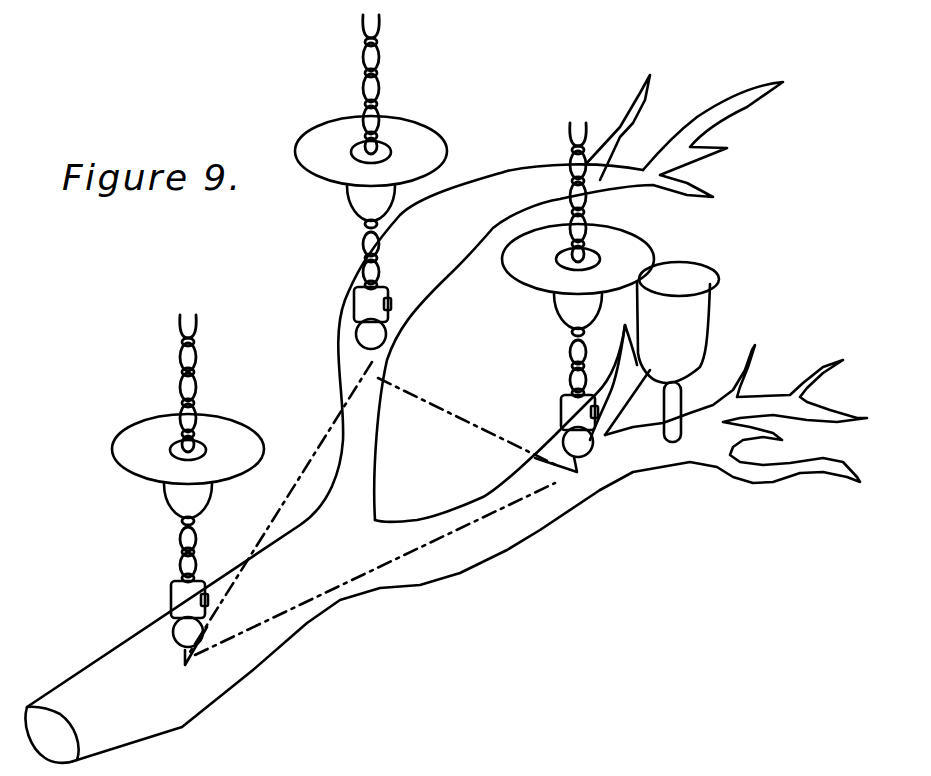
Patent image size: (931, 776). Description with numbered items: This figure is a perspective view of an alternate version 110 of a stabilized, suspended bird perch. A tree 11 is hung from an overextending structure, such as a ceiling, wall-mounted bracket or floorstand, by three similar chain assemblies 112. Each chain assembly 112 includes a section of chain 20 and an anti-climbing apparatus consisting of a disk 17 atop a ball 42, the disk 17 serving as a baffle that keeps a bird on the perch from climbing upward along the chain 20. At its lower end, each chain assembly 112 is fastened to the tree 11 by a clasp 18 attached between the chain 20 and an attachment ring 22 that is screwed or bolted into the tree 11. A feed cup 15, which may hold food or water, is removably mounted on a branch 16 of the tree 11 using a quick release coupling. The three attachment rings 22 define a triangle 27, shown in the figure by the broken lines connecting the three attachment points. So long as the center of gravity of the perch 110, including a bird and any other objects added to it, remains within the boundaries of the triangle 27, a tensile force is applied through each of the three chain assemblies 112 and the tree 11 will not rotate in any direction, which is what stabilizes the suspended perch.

The alternate version of stabilized suspended bird perch 110 is at (365, 637).
The tree 11 is at (280, 658).
The feeding cup 15 is at (727, 320).
The branch 16 is at (682, 462).
The disk shaped baffle 17 is at (383, 274).
The clasp 18 is at (355, 444).
The chain 20 is at (383, 298).
The attachment ring 22 is at (352, 483).
The triangle 27 is at (493, 519).
The ball 42 is at (359, 363).
The chain assembly 112 is at (328, 200).